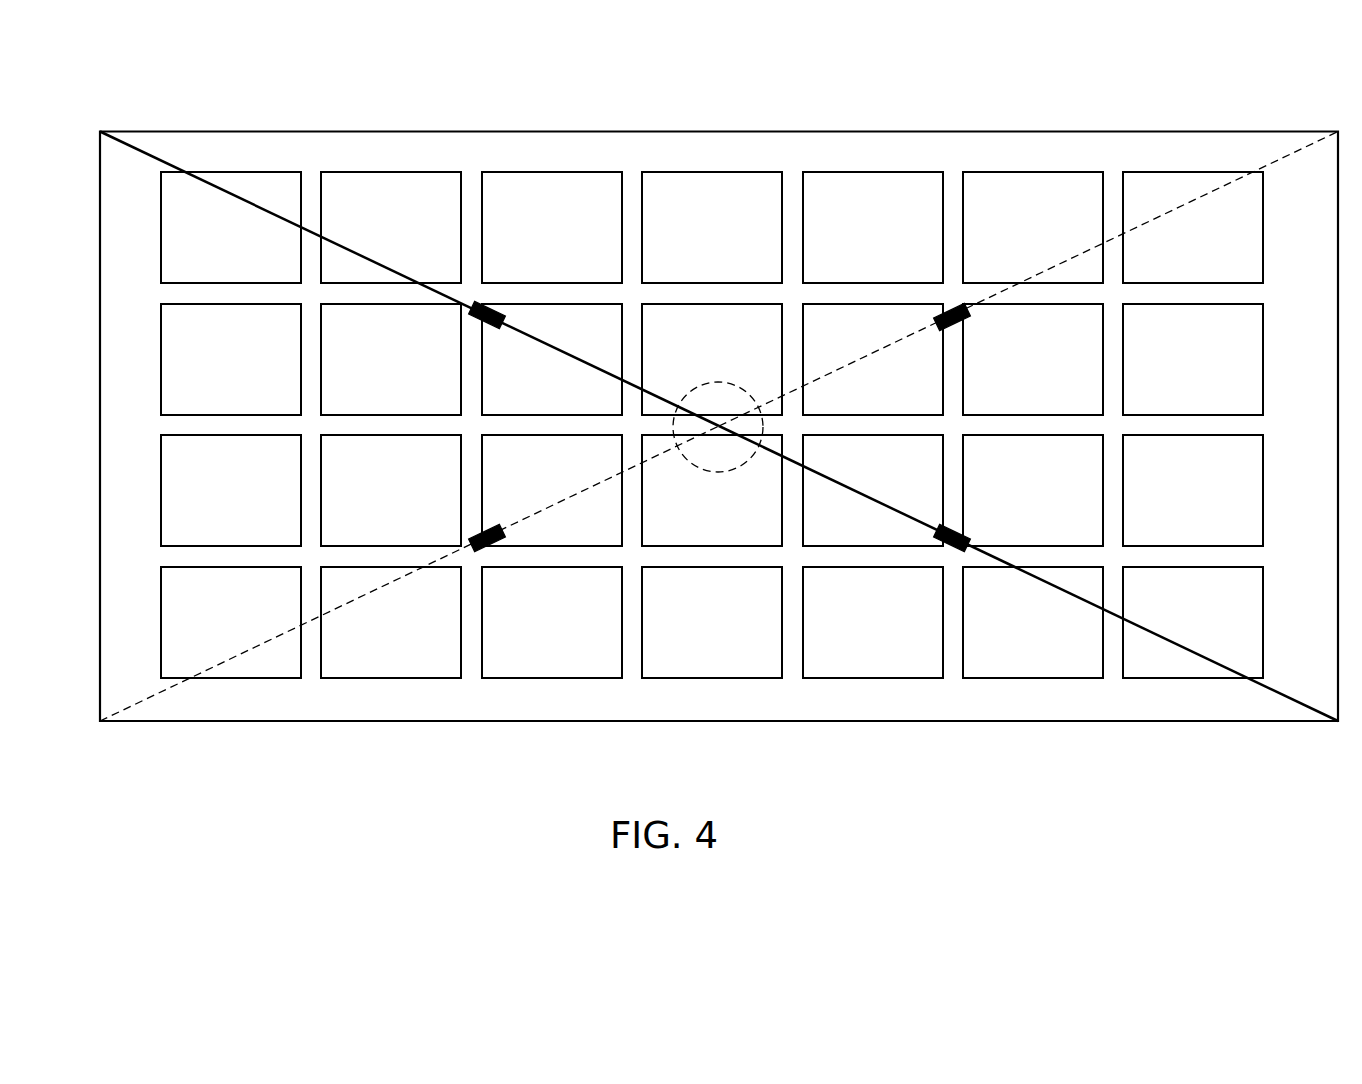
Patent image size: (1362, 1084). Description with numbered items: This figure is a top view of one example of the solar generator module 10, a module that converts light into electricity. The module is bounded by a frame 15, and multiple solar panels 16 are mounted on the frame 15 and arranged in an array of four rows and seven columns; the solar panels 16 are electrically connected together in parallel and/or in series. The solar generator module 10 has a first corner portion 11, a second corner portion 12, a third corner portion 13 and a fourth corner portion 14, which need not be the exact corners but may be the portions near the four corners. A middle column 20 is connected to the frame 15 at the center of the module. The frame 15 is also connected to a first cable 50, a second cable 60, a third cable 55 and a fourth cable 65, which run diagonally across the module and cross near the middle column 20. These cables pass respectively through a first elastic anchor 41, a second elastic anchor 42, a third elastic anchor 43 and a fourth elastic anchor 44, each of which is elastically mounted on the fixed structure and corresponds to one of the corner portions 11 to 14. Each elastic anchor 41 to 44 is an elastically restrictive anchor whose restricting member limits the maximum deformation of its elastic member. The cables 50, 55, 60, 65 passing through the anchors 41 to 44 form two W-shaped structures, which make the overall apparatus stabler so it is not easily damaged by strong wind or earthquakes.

The solar generator module 10 is at (719, 417).
The first corner portion 11 is at (1313, 135).
The second corner portion 12 is at (1300, 715).
The third corner portion 13 is at (133, 715).
The fourth corner portion 14 is at (131, 137).
The frame 15 is at (719, 432).
The solar panels 16 is at (268, 185).
The middle column 20 is at (715, 383).
The first elastic anchor 41 is at (963, 323).
The second elastic anchor 42 is at (963, 530).
The third elastic anchor 43 is at (470, 535).
The fourth elastic anchor 44 is at (470, 322).
The first cable 50 is at (1058, 263).
The third cable 55 is at (362, 598).
The second cable 60 is at (1062, 595).
The fourth cable 65 is at (397, 270).